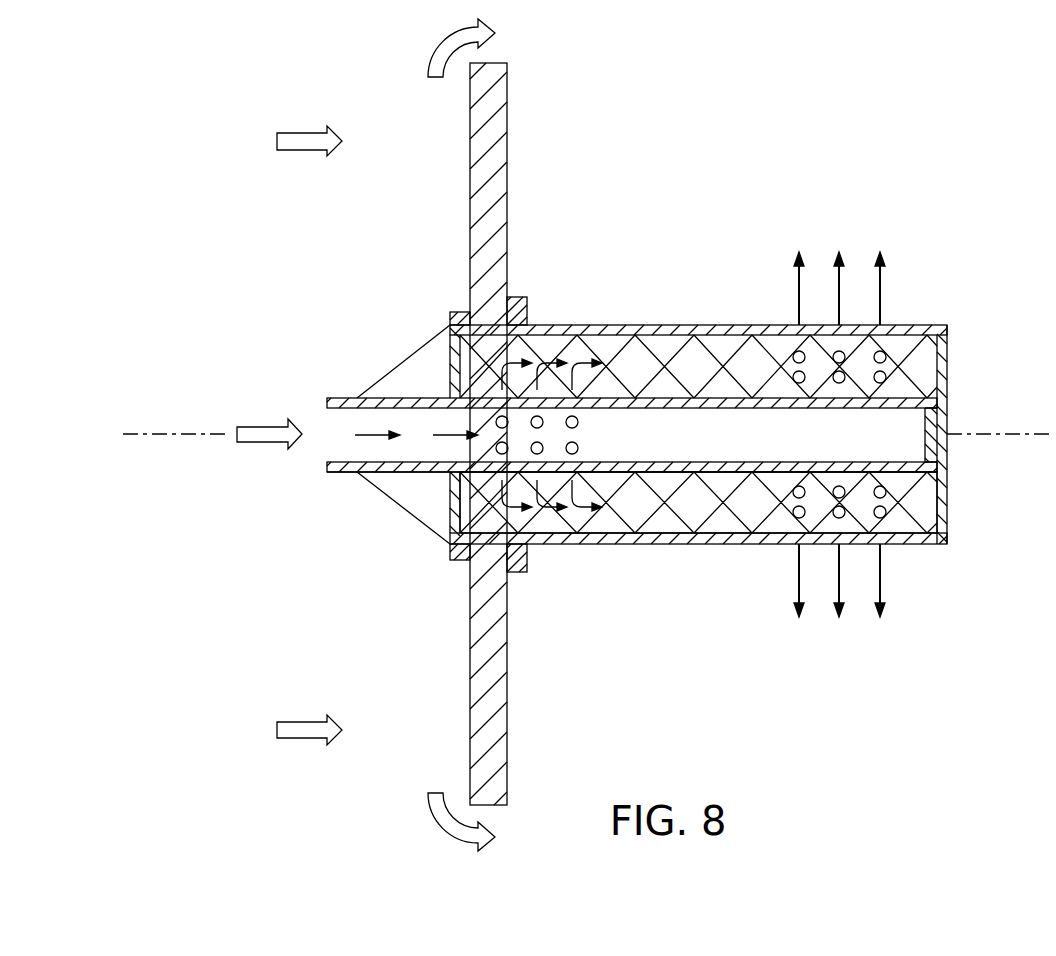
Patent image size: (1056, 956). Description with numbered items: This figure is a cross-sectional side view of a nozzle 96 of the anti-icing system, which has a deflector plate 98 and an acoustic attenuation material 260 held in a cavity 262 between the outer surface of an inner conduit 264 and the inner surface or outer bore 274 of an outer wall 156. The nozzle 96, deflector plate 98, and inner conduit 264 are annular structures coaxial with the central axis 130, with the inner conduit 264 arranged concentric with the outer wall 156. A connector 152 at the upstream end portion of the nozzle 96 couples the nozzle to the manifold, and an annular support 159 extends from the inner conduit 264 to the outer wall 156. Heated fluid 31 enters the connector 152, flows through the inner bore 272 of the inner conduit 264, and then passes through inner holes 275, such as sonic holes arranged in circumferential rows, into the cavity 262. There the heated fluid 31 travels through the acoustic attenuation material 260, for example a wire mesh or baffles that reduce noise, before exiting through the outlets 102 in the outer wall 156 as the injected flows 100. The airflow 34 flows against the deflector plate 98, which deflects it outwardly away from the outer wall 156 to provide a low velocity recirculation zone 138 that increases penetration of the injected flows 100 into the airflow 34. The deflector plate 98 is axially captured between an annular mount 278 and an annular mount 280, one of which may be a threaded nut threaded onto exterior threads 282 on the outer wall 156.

The heated fluid 31 is at (375, 433).
The airflow 34 is at (302, 133).
The nozzle 96 is at (610, 296).
The deflector plate 98 is at (470, 203).
The injected flows 100 is at (880, 296).
The outlets 102 is at (877, 491).
The central axis 130 is at (994, 444).
The recirculation zone 138 is at (575, 655).
The connector 152 is at (345, 473).
The outer wall 156 is at (697, 541).
The support 159 is at (400, 506).
The acoustic attenuation material 260 is at (565, 516).
The cavity 262 is at (608, 517).
The inner conduit 264 is at (737, 468).
The inner bore 272 is at (423, 458).
The outer bore 274 is at (678, 533).
The inner holes 275 is at (577, 445).
The annular mount 278 is at (515, 297).
The annular mount 280 is at (462, 312).
The exterior threads 282 is at (468, 556).